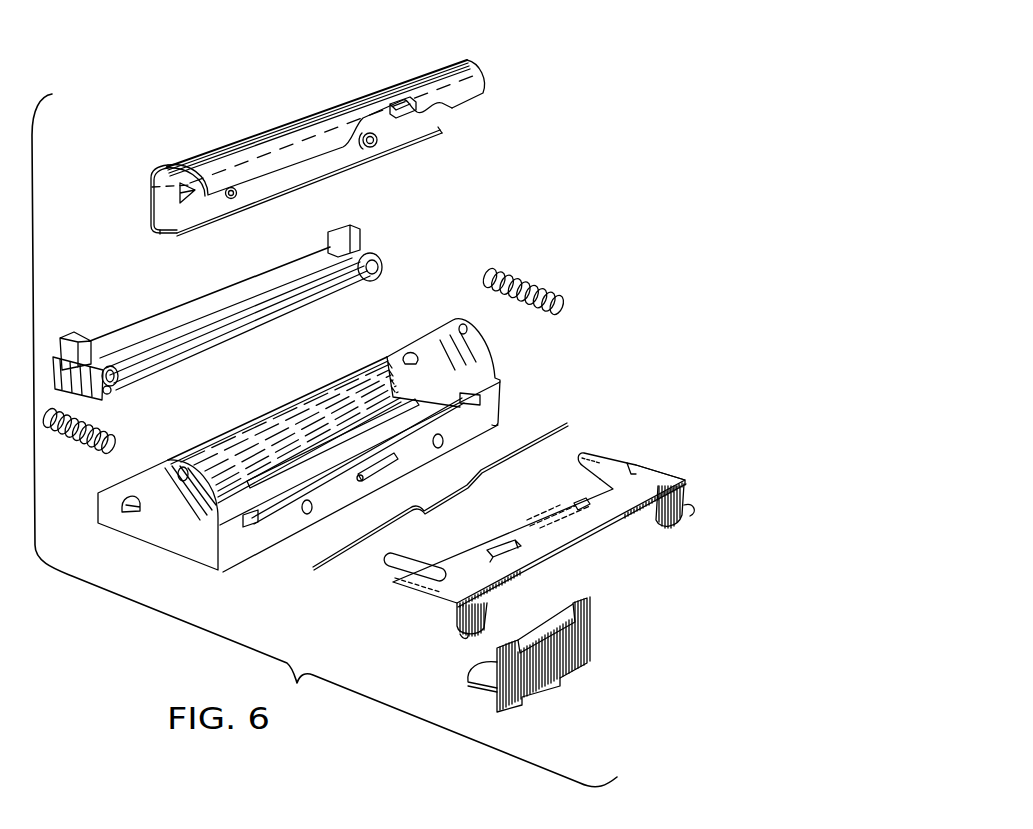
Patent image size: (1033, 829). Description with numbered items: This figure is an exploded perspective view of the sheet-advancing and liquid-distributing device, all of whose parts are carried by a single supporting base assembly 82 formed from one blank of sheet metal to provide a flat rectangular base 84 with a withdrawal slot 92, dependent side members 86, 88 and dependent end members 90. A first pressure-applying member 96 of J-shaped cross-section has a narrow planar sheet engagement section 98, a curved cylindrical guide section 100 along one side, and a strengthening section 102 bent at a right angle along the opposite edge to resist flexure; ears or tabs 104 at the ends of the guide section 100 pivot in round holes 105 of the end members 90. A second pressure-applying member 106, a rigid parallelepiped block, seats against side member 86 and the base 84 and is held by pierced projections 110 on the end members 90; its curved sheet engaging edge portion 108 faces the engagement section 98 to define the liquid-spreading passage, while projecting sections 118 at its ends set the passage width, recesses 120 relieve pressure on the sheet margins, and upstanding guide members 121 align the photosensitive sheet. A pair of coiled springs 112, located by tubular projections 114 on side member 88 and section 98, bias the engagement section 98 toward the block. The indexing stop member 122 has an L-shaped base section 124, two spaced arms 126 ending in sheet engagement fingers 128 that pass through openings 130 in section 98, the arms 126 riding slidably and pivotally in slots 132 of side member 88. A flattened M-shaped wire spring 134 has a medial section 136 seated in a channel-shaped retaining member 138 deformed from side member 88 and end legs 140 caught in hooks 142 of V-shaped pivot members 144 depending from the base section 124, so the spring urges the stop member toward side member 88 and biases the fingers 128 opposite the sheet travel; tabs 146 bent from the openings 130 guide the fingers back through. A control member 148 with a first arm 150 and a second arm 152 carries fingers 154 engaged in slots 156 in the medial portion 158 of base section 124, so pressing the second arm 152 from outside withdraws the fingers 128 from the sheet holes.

The supporting base assembly 82 is at (335, 448).
The base 84 is at (315, 432).
The side member 86 is at (262, 432).
The side member 88 is at (272, 540).
The end members 90 is at (430, 326).
The withdrawal slot 92 is at (350, 425).
The pressure-applying member 96 is at (294, 125).
The sheet engagement section 98 is at (150, 197).
The guide section 100 is at (232, 140).
The strengthening section 102 is at (306, 185).
The ears or tabs 104 is at (467, 60).
The round holes 105 is at (470, 328).
The second pressure-applying member 106 is at (247, 311).
The sheet engaging edge portion 108 is at (192, 348).
The projections 110 is at (404, 356).
The coiled springs 112 is at (542, 276).
The tubular projections 114 is at (377, 147).
The projecting sections 118 is at (380, 268).
The grooves or recesses 120 is at (372, 280).
The upstanding guide members 121 is at (362, 228).
The stop member 122 is at (555, 546).
The base section 124 is at (577, 545).
The arms 126 is at (652, 462).
The sheet engagement fingers 128 is at (598, 456).
The openings 130 is at (438, 132).
The slots 132 is at (482, 406).
The wire spring 134 is at (461, 504).
The medial section 136 is at (445, 500).
The channel-shaped retaining member 138 is at (380, 482).
The end legs 140 is at (496, 464).
The hooks 142 is at (698, 509).
The pivot members 144 is at (690, 496).
The tabs 146 is at (403, 102).
The control member 148 is at (551, 650).
The first arm 150 is at (556, 660).
The second arm 152 is at (480, 686).
The fingers 154 is at (537, 618).
The slots 156 is at (576, 503).
The medial portion 158 is at (526, 530).